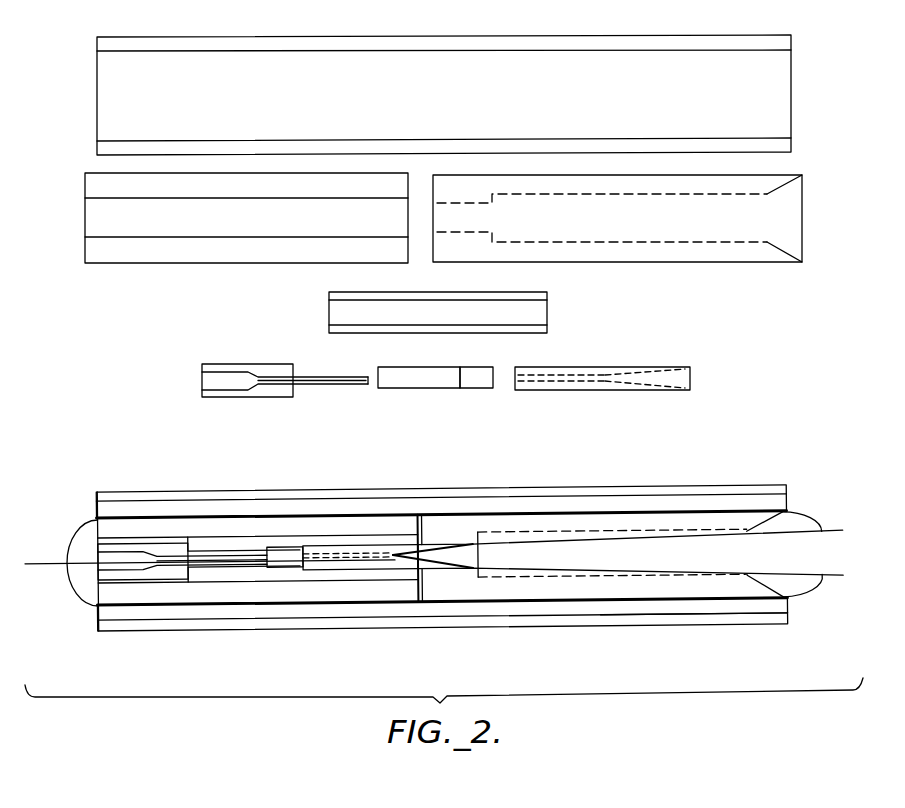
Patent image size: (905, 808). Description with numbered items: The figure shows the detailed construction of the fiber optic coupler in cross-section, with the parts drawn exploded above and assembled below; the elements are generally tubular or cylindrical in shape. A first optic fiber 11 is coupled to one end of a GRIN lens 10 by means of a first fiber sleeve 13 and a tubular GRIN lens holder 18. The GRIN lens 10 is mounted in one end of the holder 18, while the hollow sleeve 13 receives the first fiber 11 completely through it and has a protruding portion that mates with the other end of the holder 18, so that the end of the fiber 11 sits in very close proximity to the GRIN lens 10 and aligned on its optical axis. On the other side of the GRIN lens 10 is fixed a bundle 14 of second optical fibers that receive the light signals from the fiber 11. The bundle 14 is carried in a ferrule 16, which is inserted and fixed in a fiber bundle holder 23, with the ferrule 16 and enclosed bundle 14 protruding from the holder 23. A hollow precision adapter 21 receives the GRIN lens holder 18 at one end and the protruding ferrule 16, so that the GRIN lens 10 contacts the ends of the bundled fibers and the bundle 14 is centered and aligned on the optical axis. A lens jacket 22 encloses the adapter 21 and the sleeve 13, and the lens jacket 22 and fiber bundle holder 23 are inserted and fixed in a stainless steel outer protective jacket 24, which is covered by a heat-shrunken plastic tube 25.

The GRIN lens 10 is at (475, 383).
The first optic fiber 11 is at (157, 556).
The first fiber sleeve 13 is at (283, 389).
The bundle 14 is at (420, 389).
The ferrule 16 is at (592, 391).
The tubular GRIN lens holder 18 is at (220, 547).
The hollow precision adapter 21 is at (485, 333).
The lens jacket 22 is at (232, 253).
The fiber bundle holder 23 is at (602, 251).
The stainless steel outer protective jacket 24 is at (452, 38).
The heat-shrunken plastic tube 25 is at (703, 626).